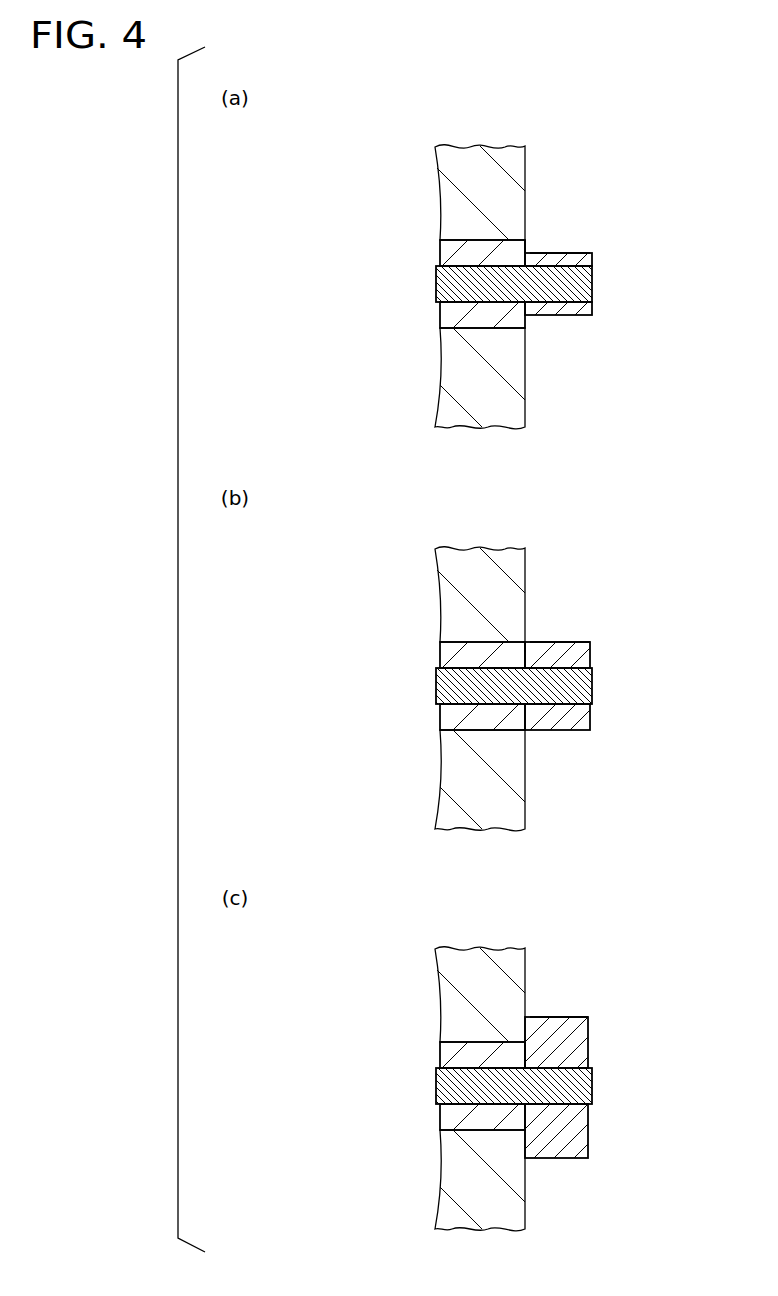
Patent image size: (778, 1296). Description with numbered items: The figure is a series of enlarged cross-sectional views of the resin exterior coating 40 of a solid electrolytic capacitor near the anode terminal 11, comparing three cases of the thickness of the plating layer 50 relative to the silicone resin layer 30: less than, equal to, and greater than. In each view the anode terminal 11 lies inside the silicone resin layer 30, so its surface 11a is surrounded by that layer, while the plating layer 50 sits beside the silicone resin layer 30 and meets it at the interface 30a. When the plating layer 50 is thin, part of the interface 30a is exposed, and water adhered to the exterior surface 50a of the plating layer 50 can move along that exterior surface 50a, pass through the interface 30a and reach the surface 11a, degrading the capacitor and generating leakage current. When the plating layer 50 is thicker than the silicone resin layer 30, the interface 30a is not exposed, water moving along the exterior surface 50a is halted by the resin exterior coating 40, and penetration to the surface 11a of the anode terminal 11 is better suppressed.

The anode terminal 11 is at (460, 284).
The surface of the anode terminal 11a is at (500, 266).
The silicone resin layer 30 is at (460, 254).
The interface 30a is at (527, 247).
The resin exterior coating 40 is at (453, 198).
The plating layer 50 is at (573, 308).
The exterior surface of the plating layer 50a is at (565, 253).